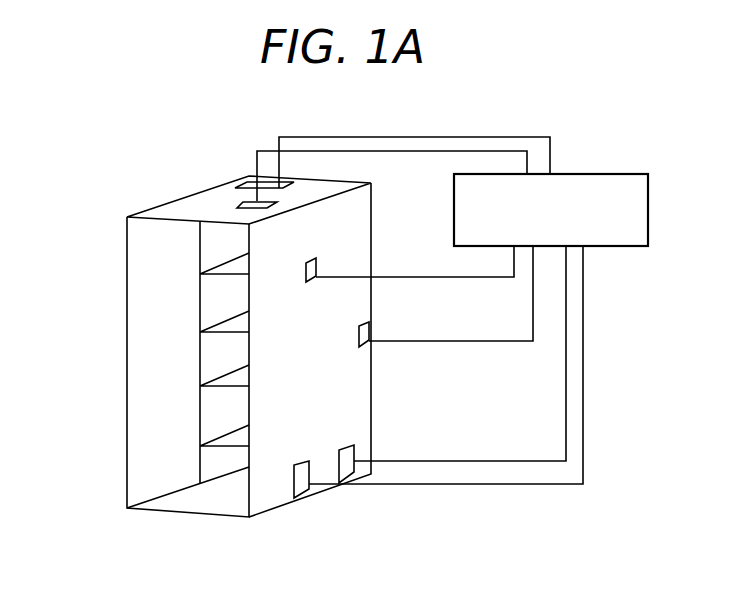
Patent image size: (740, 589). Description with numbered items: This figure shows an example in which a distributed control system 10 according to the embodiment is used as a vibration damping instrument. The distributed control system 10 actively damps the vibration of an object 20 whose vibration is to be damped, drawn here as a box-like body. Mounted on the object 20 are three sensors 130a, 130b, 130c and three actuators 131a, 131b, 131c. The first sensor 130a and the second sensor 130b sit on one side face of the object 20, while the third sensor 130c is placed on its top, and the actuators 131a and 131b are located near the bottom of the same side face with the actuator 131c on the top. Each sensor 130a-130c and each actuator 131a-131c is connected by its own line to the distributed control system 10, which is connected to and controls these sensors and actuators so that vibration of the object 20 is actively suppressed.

The distributed control system 10 is at (593, 175).
The object 20 is at (152, 210).
The sensor 130a is at (316, 267).
The sensor 130b is at (370, 329).
The sensor 130c is at (243, 205).
The actuator 131a is at (308, 490).
The actuator 131b is at (355, 470).
The actuator 131c is at (243, 190).